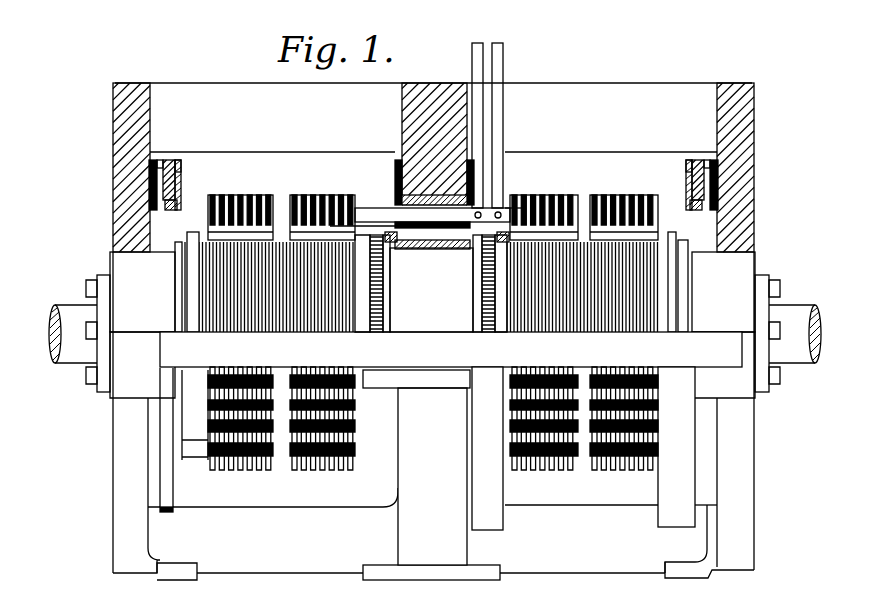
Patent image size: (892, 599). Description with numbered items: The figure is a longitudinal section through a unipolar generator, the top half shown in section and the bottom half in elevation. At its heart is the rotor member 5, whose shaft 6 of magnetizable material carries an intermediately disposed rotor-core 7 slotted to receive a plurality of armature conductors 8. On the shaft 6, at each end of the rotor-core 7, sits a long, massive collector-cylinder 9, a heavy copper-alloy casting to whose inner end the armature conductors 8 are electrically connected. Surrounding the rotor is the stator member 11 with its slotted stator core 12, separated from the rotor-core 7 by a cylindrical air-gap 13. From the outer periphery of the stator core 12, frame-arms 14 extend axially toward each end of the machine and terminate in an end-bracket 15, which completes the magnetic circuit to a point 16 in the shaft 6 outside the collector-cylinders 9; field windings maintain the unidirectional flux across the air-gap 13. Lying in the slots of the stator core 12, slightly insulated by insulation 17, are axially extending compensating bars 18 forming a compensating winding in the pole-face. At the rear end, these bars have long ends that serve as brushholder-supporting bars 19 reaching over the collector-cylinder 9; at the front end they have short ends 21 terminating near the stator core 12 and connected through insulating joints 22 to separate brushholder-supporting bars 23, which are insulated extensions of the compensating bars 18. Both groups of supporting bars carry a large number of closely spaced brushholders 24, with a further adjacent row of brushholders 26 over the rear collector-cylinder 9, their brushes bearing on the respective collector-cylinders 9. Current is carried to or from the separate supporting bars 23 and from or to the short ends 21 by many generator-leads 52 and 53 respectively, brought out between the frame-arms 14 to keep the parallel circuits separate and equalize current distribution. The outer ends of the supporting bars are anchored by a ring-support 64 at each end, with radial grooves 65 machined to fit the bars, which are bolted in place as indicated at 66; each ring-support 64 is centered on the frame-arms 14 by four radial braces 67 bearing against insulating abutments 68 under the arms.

The rotor member 5 is at (80, 279).
The shaft 6 is at (138, 297).
The rotor-core 7 is at (454, 240).
The armature conductors 8 is at (397, 242).
The collector-cylinder 9 is at (370, 306).
The stator member 11 is at (92, 133).
The stator core 12 is at (394, 210).
The air-gap 13 is at (395, 225).
The frame-arms 14 is at (252, 139).
The end-bracket 15 is at (128, 83).
The point in the shaft 16 is at (113, 245).
The insulation 17 is at (415, 240).
The compensating bars 18 is at (405, 223).
The brushholder-supporting bars 19 is at (212, 195).
The short ends 21 is at (482, 213).
The insulating joints 22 is at (501, 213).
The brushholder-supporting bars 23 is at (580, 200).
The brushholders 24 is at (254, 196).
The coil 26 is at (283, 195).
The generator-leads 52 is at (498, 142).
The generator-leads 53 is at (480, 120).
The ring-support 64 is at (178, 190).
The radial grooves 65 is at (178, 207).
The bolting 66 is at (168, 212).
The radial braces 67 is at (172, 160).
The insulating abutments 68 is at (158, 160).